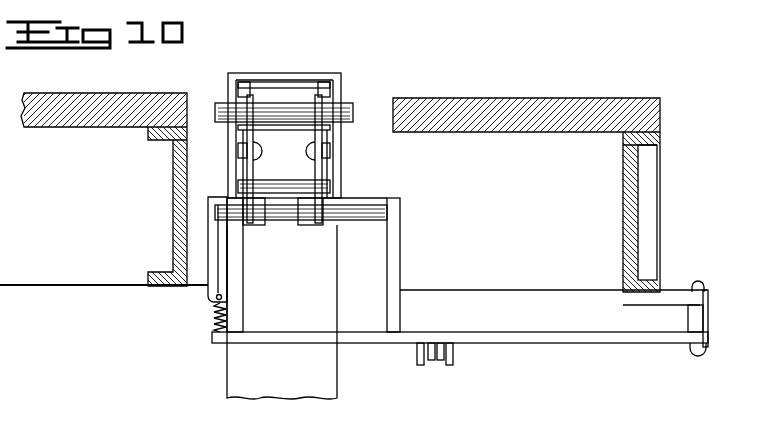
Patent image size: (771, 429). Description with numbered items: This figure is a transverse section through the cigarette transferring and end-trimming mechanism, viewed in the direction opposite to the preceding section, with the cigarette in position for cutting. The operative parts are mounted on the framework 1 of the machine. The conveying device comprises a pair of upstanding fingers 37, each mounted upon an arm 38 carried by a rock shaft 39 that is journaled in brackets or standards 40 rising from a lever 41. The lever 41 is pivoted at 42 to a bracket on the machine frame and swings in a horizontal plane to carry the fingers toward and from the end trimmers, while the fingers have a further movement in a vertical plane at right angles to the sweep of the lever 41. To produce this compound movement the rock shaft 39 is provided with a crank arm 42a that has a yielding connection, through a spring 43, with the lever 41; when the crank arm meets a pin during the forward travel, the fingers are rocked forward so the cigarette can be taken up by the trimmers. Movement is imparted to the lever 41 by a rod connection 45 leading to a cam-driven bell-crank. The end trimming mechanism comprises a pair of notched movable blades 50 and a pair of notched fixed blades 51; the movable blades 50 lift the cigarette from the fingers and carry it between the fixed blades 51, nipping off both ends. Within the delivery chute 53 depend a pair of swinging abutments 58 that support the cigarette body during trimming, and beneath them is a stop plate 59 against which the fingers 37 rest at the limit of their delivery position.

The framework 1 is at (623, 181).
The upstanding fingers 37 is at (328, 103).
The arm 38 is at (312, 175).
The rock shaft 39 is at (293, 220).
The brackets or standards 40 is at (243, 264).
The lever 41 is at (489, 334).
The pivot 42 is at (709, 313).
The crank arm 42a is at (208, 263).
The spring 43 is at (212, 316).
The rod connection 45 is at (437, 362).
The movable blades 50 is at (237, 166).
The fixed blades 51 is at (338, 94).
The delivery chute 53 is at (282, 312).
The swinging abutments 58 is at (323, 82).
The stop plate 59 is at (291, 128).